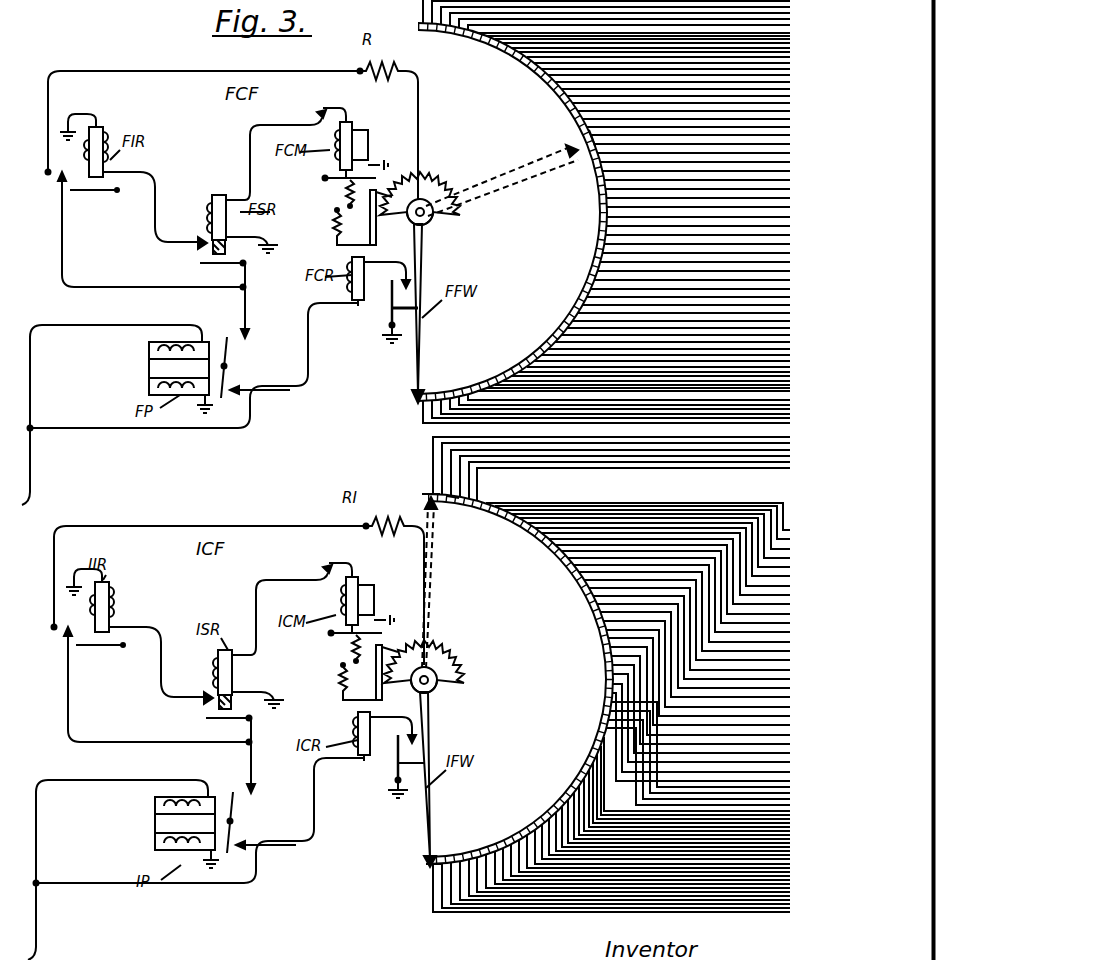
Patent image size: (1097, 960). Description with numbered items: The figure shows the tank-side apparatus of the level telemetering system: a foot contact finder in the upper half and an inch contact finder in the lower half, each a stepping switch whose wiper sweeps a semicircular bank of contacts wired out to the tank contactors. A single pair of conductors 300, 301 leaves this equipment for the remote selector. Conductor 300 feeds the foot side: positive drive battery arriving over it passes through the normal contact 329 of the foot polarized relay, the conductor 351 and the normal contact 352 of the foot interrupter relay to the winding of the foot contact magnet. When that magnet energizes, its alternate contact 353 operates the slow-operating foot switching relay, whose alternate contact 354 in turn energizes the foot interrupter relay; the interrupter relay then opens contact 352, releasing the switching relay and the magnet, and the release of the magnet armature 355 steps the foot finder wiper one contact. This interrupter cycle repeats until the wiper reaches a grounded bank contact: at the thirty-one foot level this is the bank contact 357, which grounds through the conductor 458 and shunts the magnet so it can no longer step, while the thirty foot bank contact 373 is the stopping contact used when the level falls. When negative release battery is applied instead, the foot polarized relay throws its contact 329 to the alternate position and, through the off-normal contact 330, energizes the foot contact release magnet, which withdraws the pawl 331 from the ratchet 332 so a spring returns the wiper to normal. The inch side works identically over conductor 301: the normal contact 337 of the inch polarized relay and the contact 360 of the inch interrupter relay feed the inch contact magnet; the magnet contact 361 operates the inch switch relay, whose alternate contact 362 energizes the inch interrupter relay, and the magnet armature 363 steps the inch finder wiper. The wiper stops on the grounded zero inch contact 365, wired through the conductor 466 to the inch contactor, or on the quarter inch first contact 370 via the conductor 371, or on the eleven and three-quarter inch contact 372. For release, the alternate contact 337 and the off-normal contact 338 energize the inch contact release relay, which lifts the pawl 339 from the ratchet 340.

The conductor 300 is at (52, 456).
The conductor 301 is at (51, 921).
The contact of foot polarized relay 329 is at (232, 362).
The off-normal contact 330 is at (390, 303).
The pawl 331 is at (400, 230).
The ratchet 332 is at (428, 178).
The contact of inch polarized relay 337 is at (255, 822).
The off-normal contact 338 is at (380, 767).
The pawl 339 is at (406, 676).
The ratchet 340 is at (448, 655).
The conductor 351 is at (78, 286).
The normal contact of foot interrupter relay 352 is at (58, 178).
The alternate contact of foot contact magnet 353 is at (318, 112).
The alternate contact of foot switching relay 354 is at (200, 264).
The armature of foot contact magnet 355 is at (324, 179).
The thirty-one foot bank contact 357 is at (588, 130).
The contact of inch interrupter relay 360 is at (152, 685).
The contact of inch contact magnet 361 is at (331, 555).
The alternate contact of inch switch relay 362 is at (205, 753).
The armature of inch contact magnet 363 is at (344, 648).
The grounded zero inch contact 365 is at (426, 490).
The first contact 370 is at (440, 858).
The conductor 371 is at (597, 913).
The eleven and three-quarter inch contact 372 is at (453, 501).
The thirty foot bank contact 373 is at (573, 155).
The conductor 458 is at (600, 164).
The conductor 466 is at (430, 440).